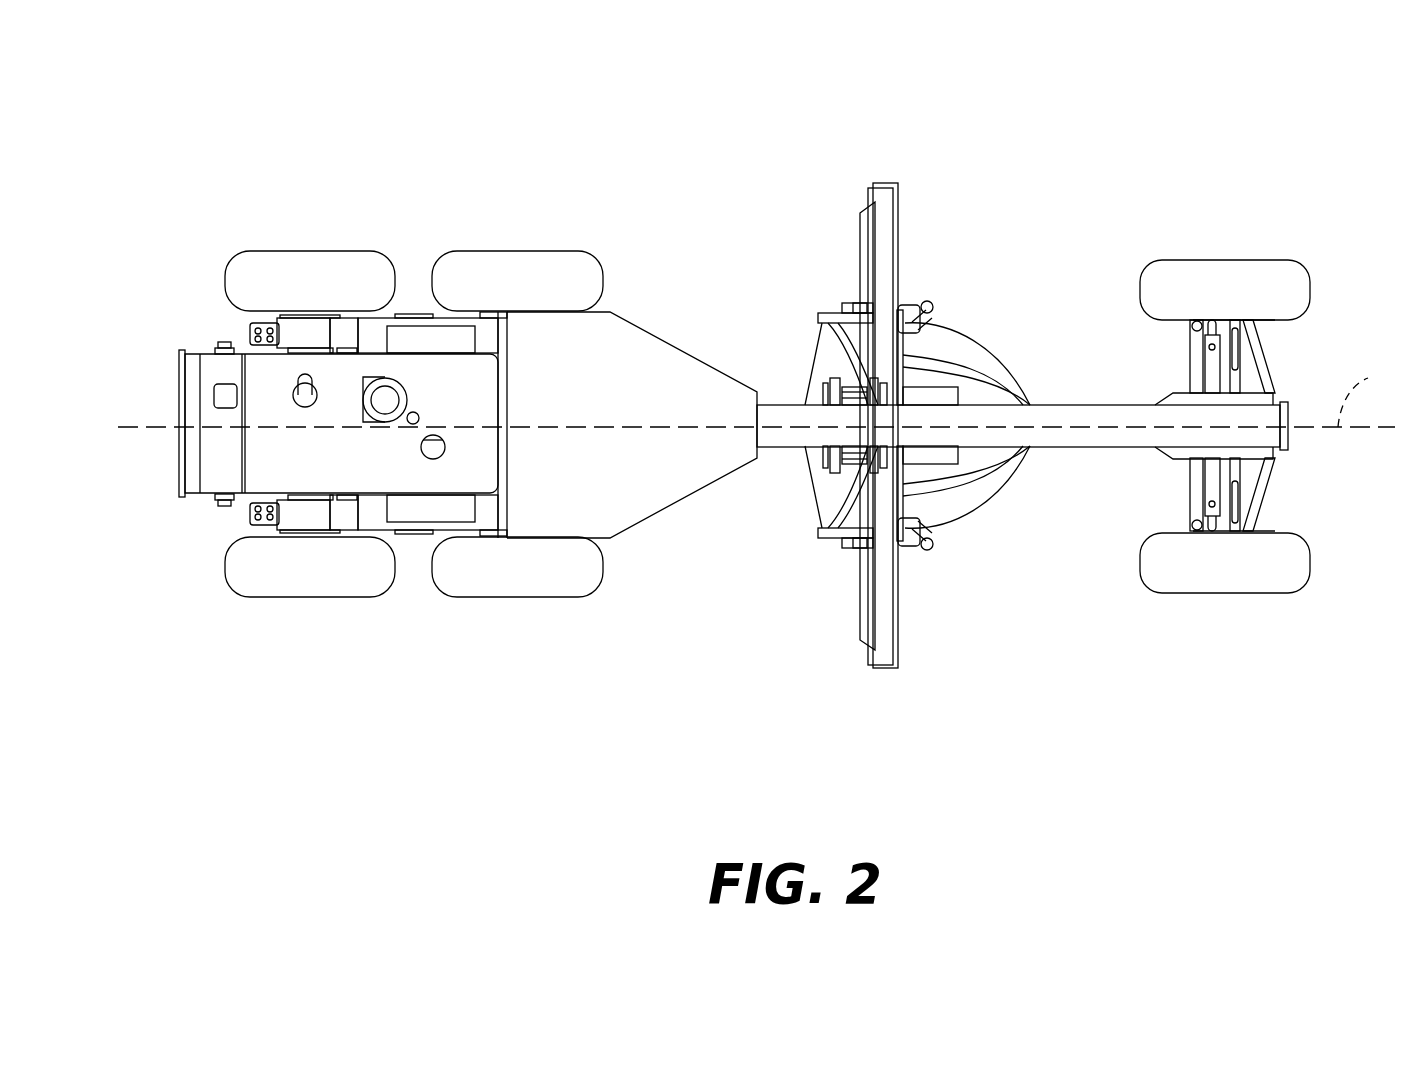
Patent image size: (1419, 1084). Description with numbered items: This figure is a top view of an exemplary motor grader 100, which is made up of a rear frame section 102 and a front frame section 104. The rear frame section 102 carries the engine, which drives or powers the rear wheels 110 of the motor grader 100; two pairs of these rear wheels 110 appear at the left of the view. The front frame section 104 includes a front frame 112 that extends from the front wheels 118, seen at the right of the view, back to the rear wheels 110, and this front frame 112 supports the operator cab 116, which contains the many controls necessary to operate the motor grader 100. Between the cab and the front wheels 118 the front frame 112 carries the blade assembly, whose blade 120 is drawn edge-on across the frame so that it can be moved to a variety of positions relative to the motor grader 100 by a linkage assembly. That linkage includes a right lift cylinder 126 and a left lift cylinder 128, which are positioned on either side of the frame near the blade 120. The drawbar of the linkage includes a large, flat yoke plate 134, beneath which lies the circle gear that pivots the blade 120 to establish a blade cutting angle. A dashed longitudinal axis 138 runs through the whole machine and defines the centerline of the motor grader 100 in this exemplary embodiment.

The motor grader 100 is at (767, 407).
The rear frame section 102 is at (415, 504).
The front frame section 104 is at (962, 463).
The rear wheels 110 is at (293, 597).
The front frame 112 is at (1077, 417).
The operator cab 116 is at (628, 313).
The front wheels 118 is at (1232, 260).
The blade 120 is at (898, 640).
The right lift cylinder 126 is at (960, 552).
The left lift cylinder 128 is at (925, 302).
The yoke plate 134 is at (973, 512).
The longitudinal axis 138 is at (1377, 392).